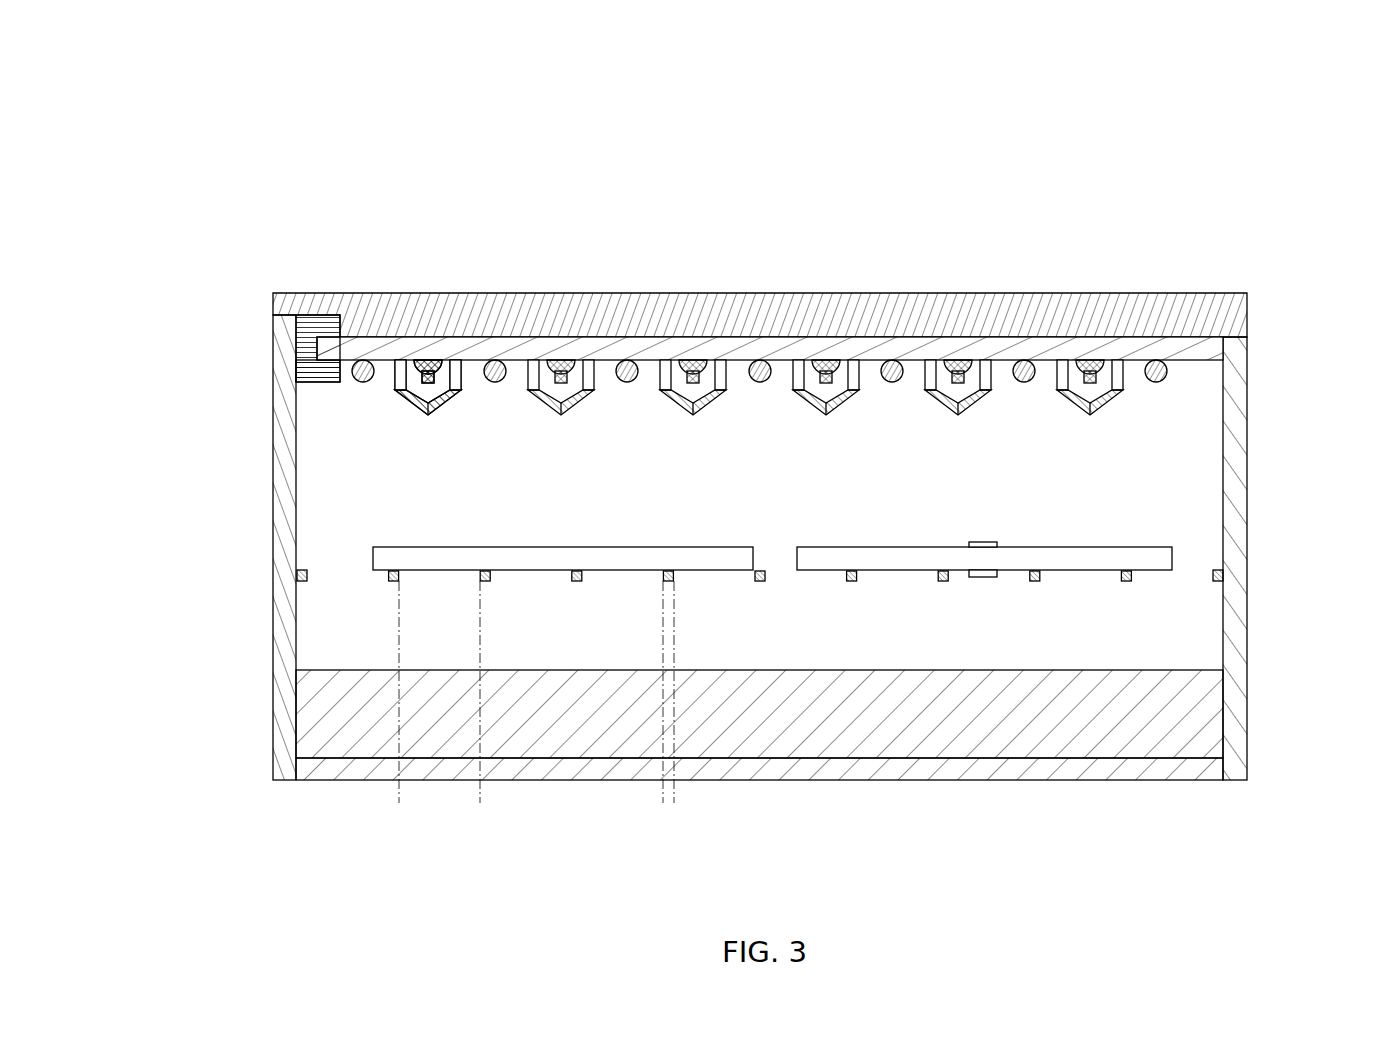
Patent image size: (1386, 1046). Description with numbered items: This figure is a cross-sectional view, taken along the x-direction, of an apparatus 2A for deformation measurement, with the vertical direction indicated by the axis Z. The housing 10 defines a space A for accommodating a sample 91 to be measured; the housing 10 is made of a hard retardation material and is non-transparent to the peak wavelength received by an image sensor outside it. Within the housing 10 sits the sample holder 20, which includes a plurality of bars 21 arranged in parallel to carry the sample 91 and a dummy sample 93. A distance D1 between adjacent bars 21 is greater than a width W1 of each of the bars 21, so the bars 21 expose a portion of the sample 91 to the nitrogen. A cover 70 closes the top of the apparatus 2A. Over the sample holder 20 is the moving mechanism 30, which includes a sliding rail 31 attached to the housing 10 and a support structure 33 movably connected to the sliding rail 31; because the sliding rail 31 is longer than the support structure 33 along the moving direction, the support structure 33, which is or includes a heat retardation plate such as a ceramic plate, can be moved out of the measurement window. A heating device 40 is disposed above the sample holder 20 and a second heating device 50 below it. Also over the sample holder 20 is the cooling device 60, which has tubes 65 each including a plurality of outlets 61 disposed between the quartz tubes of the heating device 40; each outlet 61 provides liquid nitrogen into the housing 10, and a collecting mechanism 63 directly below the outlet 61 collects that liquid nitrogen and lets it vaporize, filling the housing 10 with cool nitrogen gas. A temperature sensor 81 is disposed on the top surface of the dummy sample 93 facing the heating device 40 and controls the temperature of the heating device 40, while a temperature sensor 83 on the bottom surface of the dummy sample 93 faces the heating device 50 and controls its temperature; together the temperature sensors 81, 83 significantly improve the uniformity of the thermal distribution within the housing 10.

The apparatus for deformation measurement 2A is at (128, 90).
The housing 10 is at (273, 507).
The sample holder 20 is at (300, 572).
The bars 21 is at (390, 581).
The moving mechanism 30 is at (205, 303).
The sliding rail 31 is at (328, 372).
The support structure 33 is at (325, 352).
The heating device 40 is at (1162, 372).
The heating device 50 is at (1133, 670).
The cooling device 60 is at (205, 383).
The outlet 61 is at (403, 376).
The collecting mechanism 63 is at (418, 402).
The tubes 65 is at (424, 378).
The cover 70 is at (1247, 310).
The temperature sensor 81 is at (984, 543).
The temperature sensor 83 is at (985, 577).
The sample 91 is at (432, 560).
The dummy sample 93 is at (892, 560).
The space A is at (1198, 497).
The distance D1 is at (480, 795).
The width W1 is at (708, 797).
The Z axis Z is at (1370, 883).